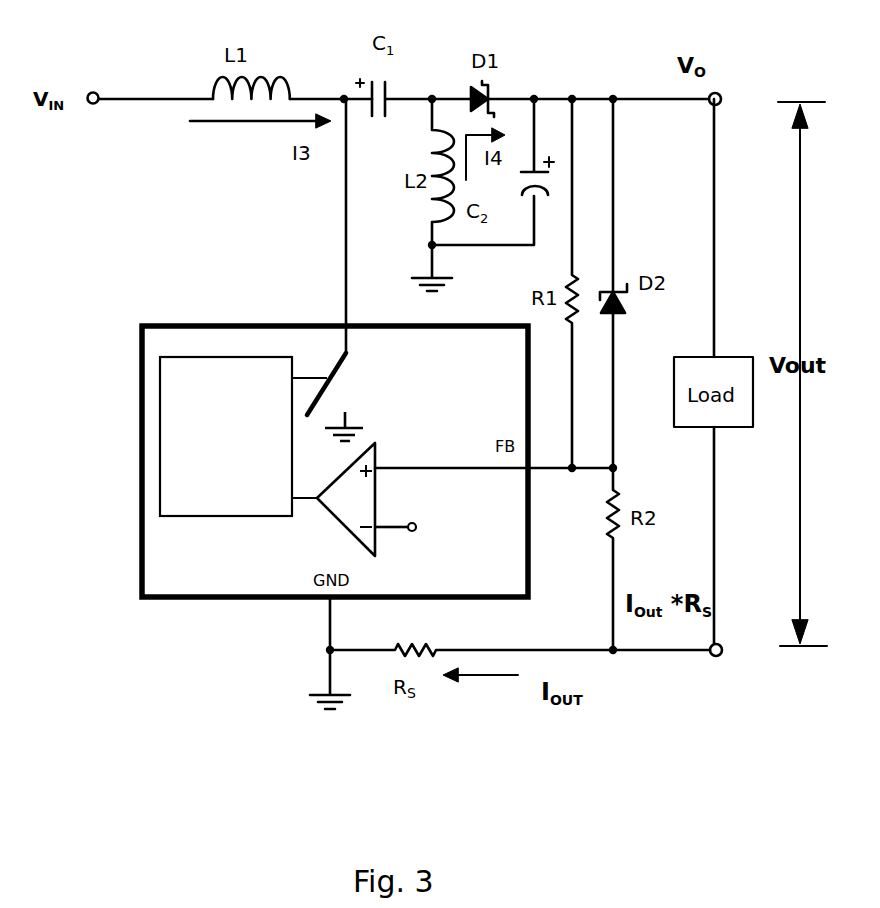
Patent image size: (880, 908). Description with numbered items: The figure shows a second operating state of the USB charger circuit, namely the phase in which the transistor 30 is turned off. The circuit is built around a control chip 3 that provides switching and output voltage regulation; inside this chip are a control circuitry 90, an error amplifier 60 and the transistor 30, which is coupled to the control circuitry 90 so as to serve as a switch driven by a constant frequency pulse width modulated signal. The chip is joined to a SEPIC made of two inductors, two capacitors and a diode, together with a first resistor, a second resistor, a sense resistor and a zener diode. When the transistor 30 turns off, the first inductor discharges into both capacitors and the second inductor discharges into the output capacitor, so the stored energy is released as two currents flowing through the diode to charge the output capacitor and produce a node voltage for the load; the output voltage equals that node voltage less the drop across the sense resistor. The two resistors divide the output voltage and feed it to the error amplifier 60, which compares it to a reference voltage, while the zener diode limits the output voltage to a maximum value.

The control chip 3 is at (335, 461).
The control circuitry 90 is at (165, 350).
The transistor 30 is at (332, 362).
The error amplifier 60 is at (375, 545).